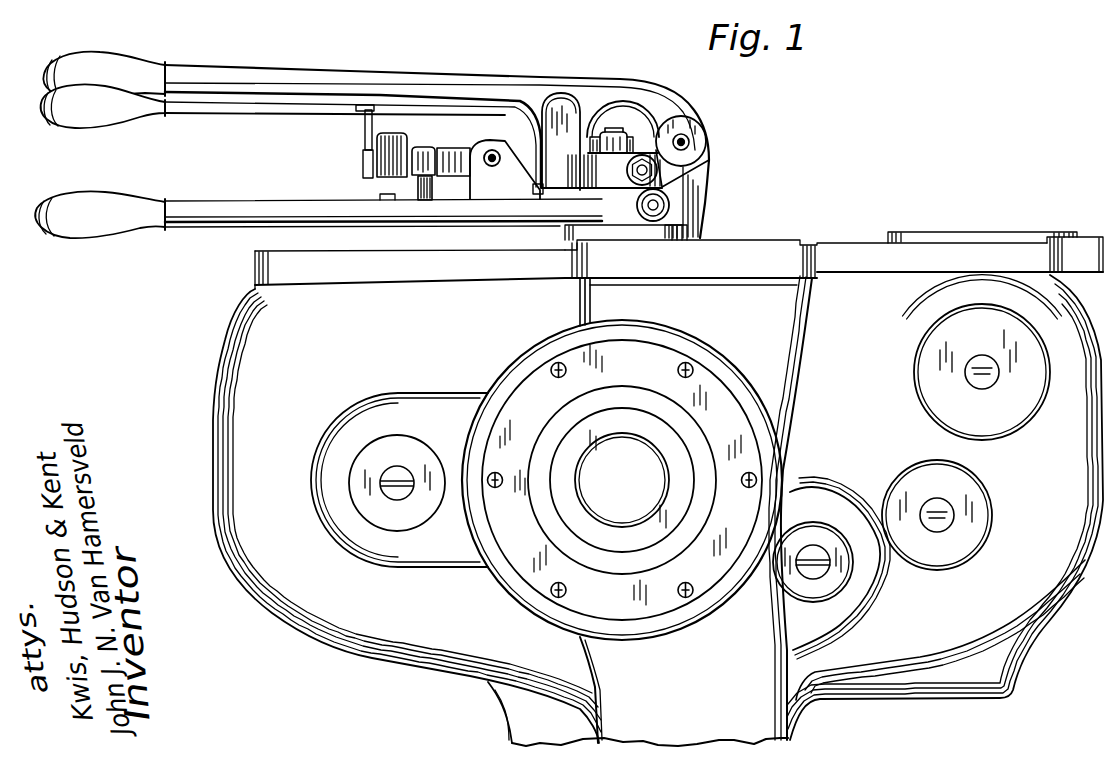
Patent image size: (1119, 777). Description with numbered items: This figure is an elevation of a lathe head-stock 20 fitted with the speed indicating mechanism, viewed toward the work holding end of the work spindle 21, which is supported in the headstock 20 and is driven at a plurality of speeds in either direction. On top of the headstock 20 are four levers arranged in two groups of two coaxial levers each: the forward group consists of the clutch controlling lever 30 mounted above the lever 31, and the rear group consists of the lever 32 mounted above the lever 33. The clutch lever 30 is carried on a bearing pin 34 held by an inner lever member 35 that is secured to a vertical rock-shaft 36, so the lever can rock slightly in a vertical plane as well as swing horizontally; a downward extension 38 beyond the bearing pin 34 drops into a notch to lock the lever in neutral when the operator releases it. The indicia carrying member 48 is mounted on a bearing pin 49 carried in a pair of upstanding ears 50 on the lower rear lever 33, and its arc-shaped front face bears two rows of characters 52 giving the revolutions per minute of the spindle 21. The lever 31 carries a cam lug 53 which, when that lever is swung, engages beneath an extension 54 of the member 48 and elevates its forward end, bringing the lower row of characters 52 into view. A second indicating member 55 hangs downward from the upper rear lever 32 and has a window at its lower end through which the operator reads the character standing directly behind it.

The headstock 20 is at (852, 248).
The work spindle 21 is at (587, 433).
The clutch controlling lever 30 is at (330, 80).
The lower lever of the forward group 31 is at (245, 210).
The upper lever of the rear group 32 is at (247, 103).
The lower lever of the rear group 33 is at (41, 199).
The bearing pin 34 is at (686, 140).
The inner lever member 35 is at (558, 141).
The vertical rock-shaft 36 is at (613, 130).
The downward extension 38 is at (702, 215).
The indicia carrying member 48 is at (455, 157).
The bearing pin 49 is at (497, 154).
The upstanding ears 50 is at (483, 183).
The characters 52 is at (375, 142).
The cam lug 53 is at (430, 187).
The extension 54 is at (425, 150).
The second indicating member 55 is at (373, 123).